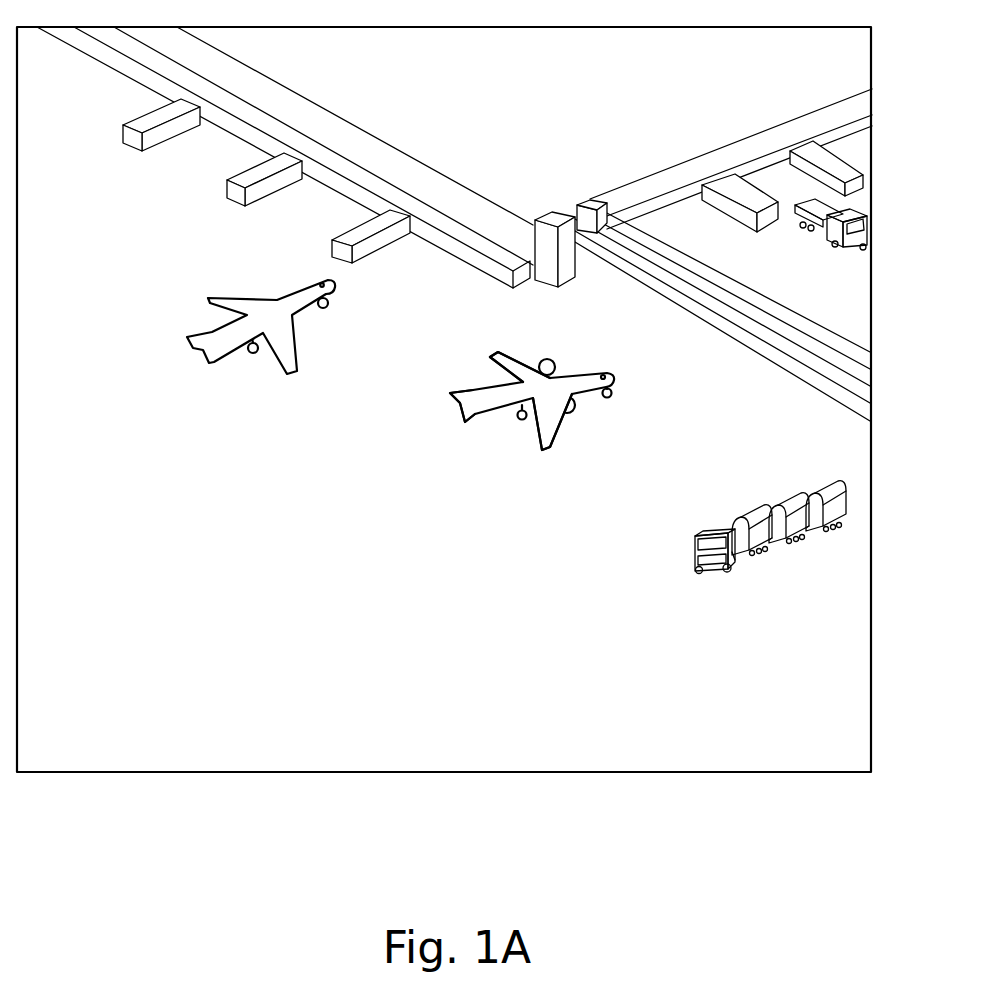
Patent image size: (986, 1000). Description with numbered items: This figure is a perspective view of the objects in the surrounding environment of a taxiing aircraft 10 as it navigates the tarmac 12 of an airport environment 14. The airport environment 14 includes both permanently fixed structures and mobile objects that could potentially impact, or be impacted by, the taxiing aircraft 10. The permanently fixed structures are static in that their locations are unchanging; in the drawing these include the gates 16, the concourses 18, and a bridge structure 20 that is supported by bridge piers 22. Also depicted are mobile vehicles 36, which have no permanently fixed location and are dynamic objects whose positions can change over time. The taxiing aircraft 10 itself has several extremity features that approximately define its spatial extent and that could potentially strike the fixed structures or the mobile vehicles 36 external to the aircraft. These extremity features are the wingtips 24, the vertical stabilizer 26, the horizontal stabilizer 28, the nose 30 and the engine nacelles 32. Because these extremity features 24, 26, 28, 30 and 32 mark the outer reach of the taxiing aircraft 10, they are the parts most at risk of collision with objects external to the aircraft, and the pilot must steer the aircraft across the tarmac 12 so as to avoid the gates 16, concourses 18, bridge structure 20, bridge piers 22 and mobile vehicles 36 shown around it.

The taxiing aircraft 10 is at (490, 433).
The tarmac 12 is at (224, 541).
The airport environment 14 is at (485, 255).
The gates 16 is at (340, 254).
The concourses 18 is at (637, 188).
The bridge structure 20 is at (780, 367).
The bridge piers 22 is at (558, 288).
The wingtips 24 is at (492, 352).
The vertical stabilizer 26 is at (455, 388).
The horizontal stabilizer 28 is at (462, 420).
The nose 30 is at (615, 380).
The engine nacelles 32 is at (545, 366).
The mobile vehicles 36 is at (790, 190).